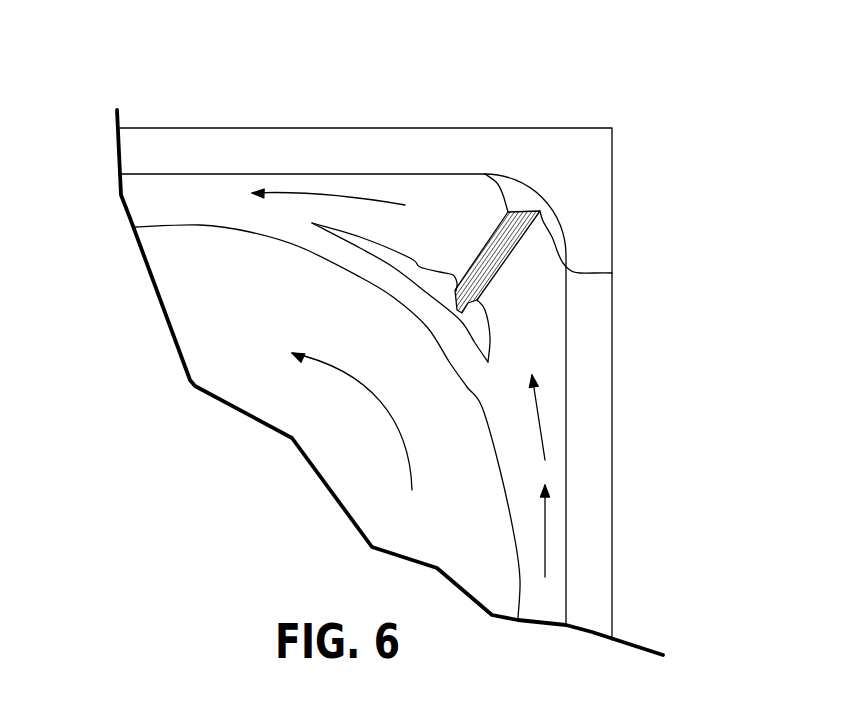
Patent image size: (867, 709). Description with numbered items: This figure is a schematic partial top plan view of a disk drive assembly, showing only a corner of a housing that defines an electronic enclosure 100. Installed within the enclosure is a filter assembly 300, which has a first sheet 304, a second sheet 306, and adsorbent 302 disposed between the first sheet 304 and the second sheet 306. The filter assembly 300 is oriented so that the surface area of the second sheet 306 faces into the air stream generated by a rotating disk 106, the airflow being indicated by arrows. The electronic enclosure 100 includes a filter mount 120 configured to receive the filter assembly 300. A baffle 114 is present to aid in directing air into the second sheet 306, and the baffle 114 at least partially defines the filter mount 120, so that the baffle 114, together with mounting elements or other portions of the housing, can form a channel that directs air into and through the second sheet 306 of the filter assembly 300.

The electronic enclosure 100 is at (400, 78).
The rotating disk 106 is at (348, 380).
The baffle 114 is at (388, 262).
The filter mount 120 is at (527, 198).
The filter assembly 300 is at (463, 240).
The adsorbent 302 is at (496, 272).
The first sheet 304 is at (490, 250).
The second sheet 306 is at (612, 273).